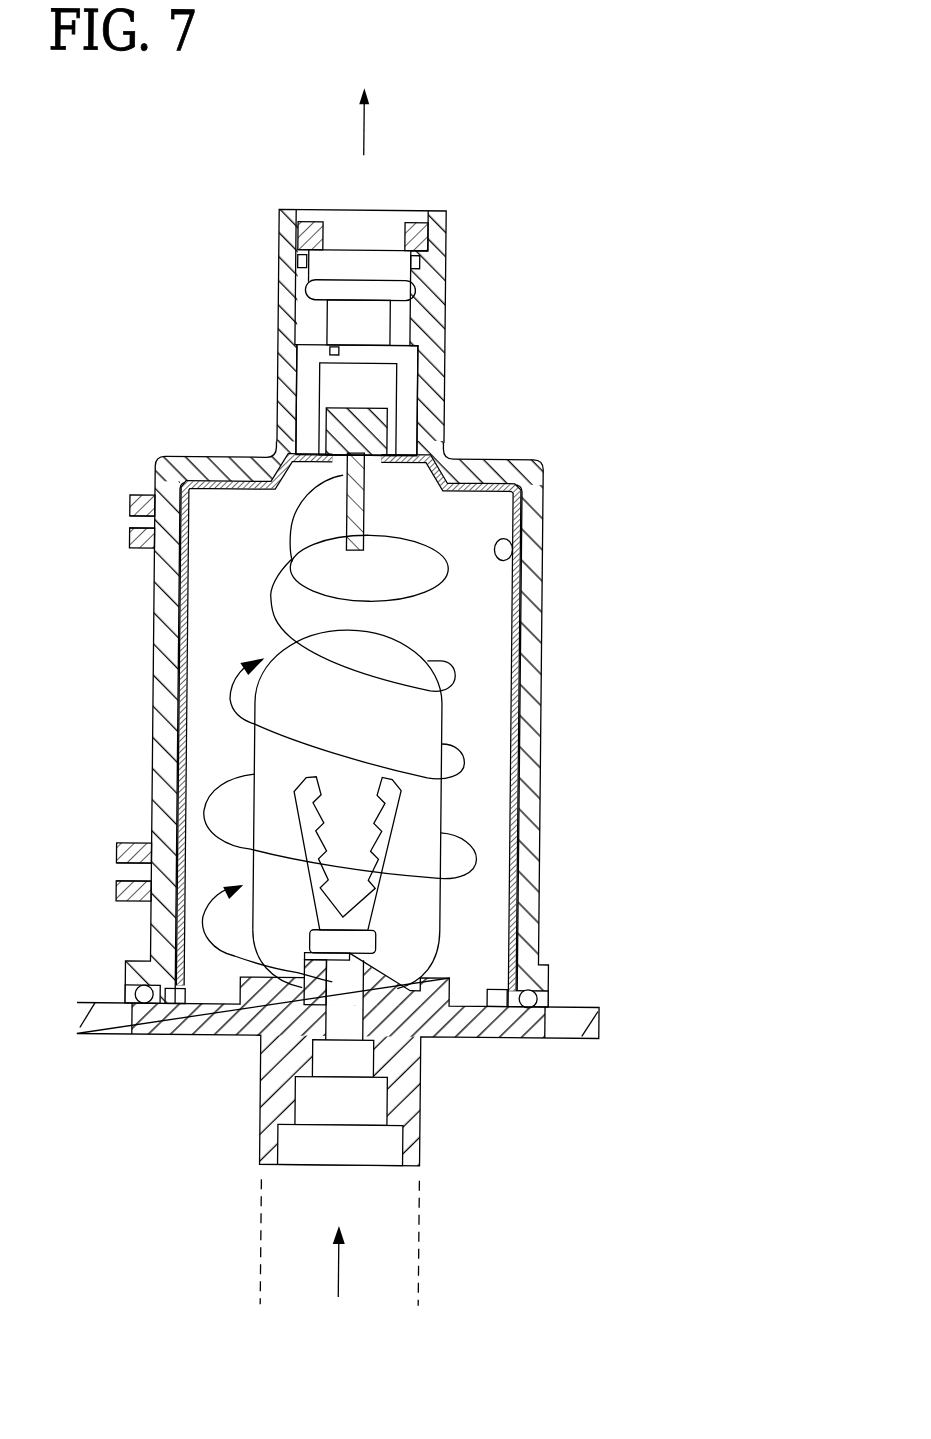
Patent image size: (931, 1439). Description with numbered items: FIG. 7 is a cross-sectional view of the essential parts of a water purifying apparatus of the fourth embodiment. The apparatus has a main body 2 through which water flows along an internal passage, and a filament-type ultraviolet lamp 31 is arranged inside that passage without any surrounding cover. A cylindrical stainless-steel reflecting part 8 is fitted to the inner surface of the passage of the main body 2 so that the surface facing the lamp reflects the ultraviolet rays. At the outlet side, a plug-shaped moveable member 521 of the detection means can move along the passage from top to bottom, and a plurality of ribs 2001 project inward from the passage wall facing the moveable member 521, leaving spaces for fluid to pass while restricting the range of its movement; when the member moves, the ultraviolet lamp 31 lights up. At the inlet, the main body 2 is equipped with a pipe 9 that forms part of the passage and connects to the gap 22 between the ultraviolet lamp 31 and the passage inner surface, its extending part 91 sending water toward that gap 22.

The main body 2 is at (153, 619).
The ribs 2001 is at (308, 397).
The moveable member 521 is at (380, 419).
The reflecting part 8 is at (505, 545).
The gap 22 is at (480, 676).
The ultraviolet lamp 31 is at (445, 722).
The extending part 91 is at (350, 958).
The pipe 9 is at (424, 1116).